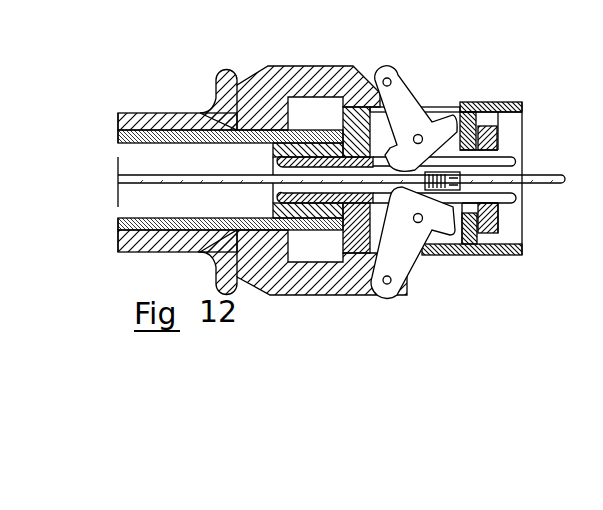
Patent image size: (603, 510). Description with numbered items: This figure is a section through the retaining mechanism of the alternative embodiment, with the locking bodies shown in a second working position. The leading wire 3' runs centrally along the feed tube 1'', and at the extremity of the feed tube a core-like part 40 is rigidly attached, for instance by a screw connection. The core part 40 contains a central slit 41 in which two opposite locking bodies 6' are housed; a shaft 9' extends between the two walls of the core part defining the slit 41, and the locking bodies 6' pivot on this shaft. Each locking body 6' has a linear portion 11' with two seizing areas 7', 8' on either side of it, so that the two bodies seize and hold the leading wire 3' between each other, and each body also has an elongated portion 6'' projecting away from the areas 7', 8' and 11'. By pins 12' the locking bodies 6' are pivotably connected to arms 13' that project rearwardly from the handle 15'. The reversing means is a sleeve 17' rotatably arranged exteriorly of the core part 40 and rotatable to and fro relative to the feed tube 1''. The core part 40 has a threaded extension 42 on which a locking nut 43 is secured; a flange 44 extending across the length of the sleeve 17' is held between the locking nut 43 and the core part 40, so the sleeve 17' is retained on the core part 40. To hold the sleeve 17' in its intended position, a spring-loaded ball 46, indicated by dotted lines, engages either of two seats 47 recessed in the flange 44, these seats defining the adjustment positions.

The handle 15' is at (230, 165).
The feed tube 1'' is at (290, 78).
The arms 13' is at (303, 277).
The core-like part 40 is at (350, 253).
The linear portion 11' is at (417, 157).
The leading wire 3' is at (342, 160).
The spring-loaded ball 46 is at (538, 181).
The seizing area 8' is at (415, 94).
The threaded extension 42 is at (501, 205).
The flange 44 is at (508, 102).
The locking nut 43 is at (501, 245).
The seats 47 is at (470, 126).
The central slit 41 is at (460, 237).
The sleeve 17' is at (471, 137).
The locking bodies 6' is at (406, 178).
The elongated portion 6'' is at (385, 59).
The seizing area 7' is at (383, 94).
The pins 12' is at (380, 300).
The shafts 9' is at (442, 257).